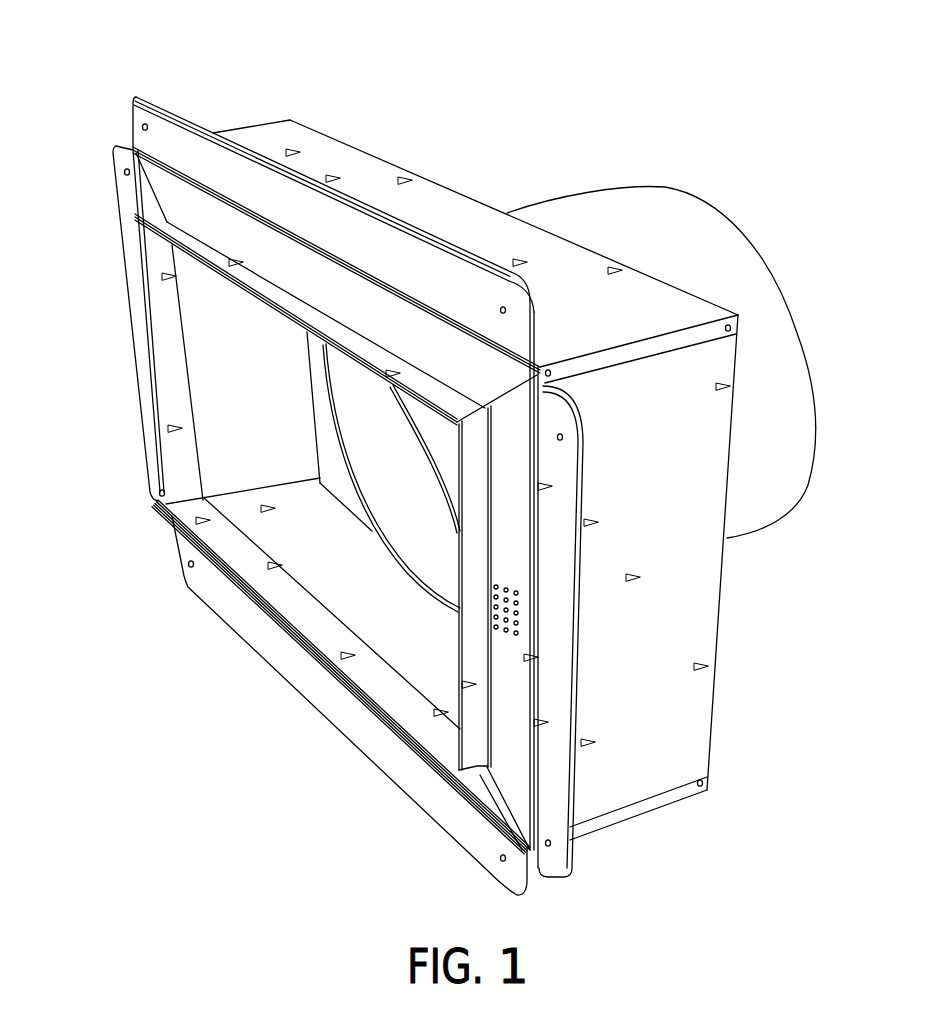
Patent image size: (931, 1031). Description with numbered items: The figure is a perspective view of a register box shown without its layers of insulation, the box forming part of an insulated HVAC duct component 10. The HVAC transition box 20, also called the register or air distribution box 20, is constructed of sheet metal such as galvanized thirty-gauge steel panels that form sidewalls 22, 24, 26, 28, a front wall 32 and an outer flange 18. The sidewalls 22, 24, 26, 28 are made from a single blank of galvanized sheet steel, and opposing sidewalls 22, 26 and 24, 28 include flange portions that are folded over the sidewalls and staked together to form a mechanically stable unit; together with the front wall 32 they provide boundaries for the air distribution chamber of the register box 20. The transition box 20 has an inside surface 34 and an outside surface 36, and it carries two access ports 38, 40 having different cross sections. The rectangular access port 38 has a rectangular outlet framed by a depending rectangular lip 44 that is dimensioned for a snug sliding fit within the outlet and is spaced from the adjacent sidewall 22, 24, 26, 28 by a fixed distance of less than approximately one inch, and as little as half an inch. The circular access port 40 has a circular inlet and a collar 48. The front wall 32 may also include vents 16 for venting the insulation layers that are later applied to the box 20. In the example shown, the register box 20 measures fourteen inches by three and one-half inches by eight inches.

The insulated HVAC duct component 10 is at (396, 88).
The vents 16 is at (505, 637).
The outer flange 18 is at (397, 772).
The HVAC transition box 20 is at (447, 204).
The sidewall 22 is at (657, 297).
The sidewall 24 is at (700, 627).
The sidewall 26 is at (413, 652).
The sidewall 28 is at (200, 374).
The front wall 32 is at (510, 540).
The inside surface 34 is at (212, 437).
The outside surface 36 is at (249, 132).
The rectangular access port 38 is at (217, 558).
The circular access port 40 is at (366, 535).
The rectangular lip 44 is at (282, 580).
The collar 48 is at (592, 210).